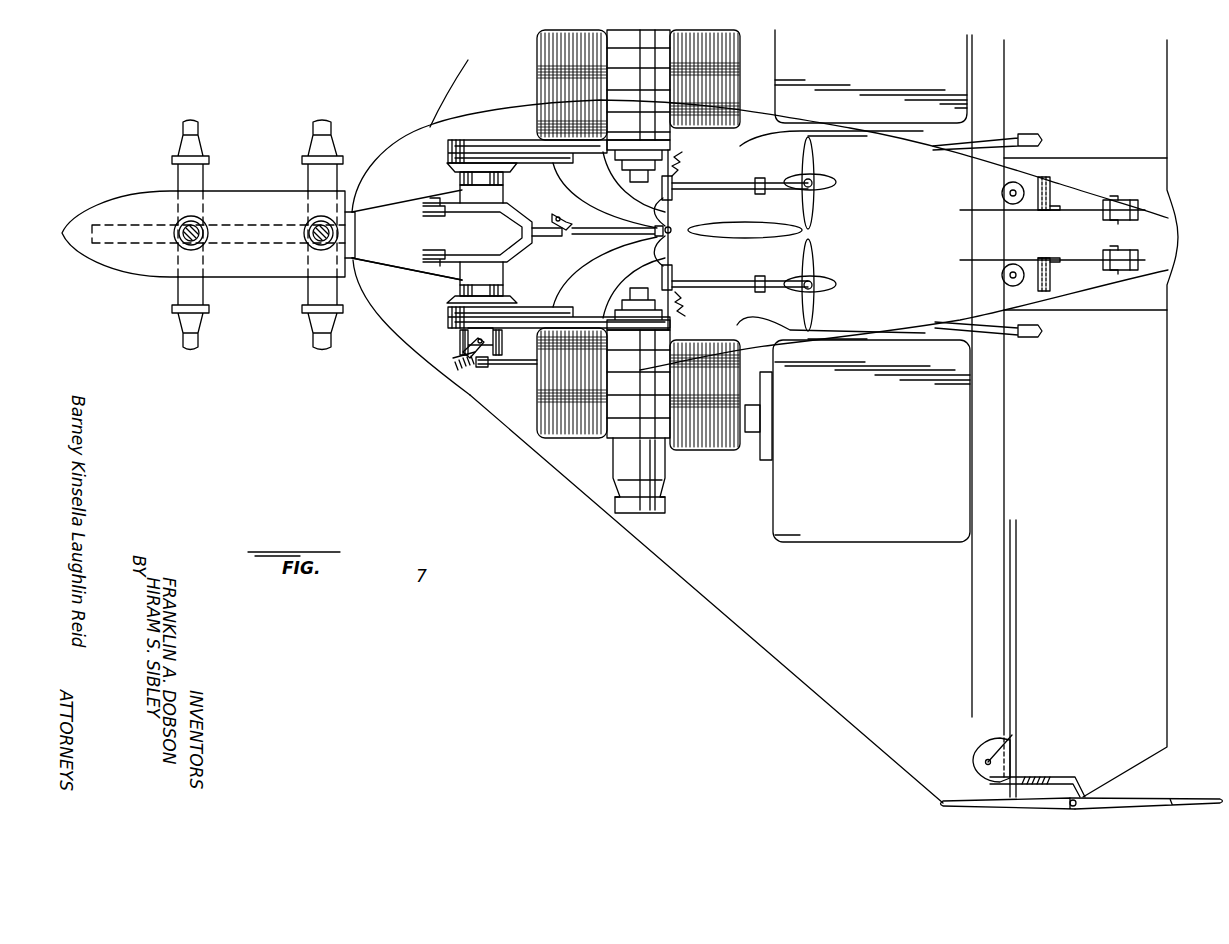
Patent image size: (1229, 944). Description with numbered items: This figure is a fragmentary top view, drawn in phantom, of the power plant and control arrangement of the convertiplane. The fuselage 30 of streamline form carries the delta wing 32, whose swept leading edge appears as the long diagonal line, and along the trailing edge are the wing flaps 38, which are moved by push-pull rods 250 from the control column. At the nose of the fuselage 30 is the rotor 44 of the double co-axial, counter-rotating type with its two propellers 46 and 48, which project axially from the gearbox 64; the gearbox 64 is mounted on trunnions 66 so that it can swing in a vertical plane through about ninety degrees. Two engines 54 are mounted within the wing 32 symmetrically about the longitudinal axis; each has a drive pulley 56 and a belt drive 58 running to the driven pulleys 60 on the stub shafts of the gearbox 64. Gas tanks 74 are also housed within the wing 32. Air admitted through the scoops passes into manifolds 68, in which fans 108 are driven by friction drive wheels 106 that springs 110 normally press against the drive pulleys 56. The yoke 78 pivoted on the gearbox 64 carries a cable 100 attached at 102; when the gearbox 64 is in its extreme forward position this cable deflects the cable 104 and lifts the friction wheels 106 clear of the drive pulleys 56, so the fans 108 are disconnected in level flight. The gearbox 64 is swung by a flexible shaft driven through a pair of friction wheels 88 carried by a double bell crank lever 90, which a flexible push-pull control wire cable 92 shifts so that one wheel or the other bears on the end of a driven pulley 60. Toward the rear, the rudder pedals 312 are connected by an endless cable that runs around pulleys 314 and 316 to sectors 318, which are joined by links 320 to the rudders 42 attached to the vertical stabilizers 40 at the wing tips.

The fuselage 30 is at (422, 338).
The wing 32 is at (802, 663).
The wing flaps 38 is at (1165, 110).
The vertical stabilizers 40 is at (1045, 796).
The rudders 42 is at (1155, 800).
The rotor 44 is at (250, 192).
The propeller 46 is at (206, 152).
The propeller 48 is at (321, 152).
The engines 54 is at (540, 68).
The drive pulley 56 is at (603, 160).
The belt drive 58 is at (485, 147).
The driven pulleys 60 is at (447, 165).
The gearbox 64 is at (410, 262).
The trunnions 66 is at (505, 180).
The manifolds 68 is at (763, 150).
The gas tanks 74 is at (882, 80).
The yoke 78 is at (520, 226).
The friction wheels 88 is at (458, 344).
The double bell crank lever 90 is at (483, 366).
The push-pull control wire cable 92 is at (518, 366).
The cable 100 is at (596, 229).
The attachment point 102 is at (560, 218).
The cable 104 is at (688, 226).
The friction drive wheels 106 is at (664, 195).
The fans 108 is at (815, 205).
The springs 110 is at (690, 165).
The push-pull rods 250 is at (1015, 137).
The rudder pedals 312 is at (1050, 284).
The pulleys 314 is at (1125, 228).
The pulleys 316 is at (1017, 204).
The sectors 318 is at (975, 757).
The links 320 is at (1040, 776).